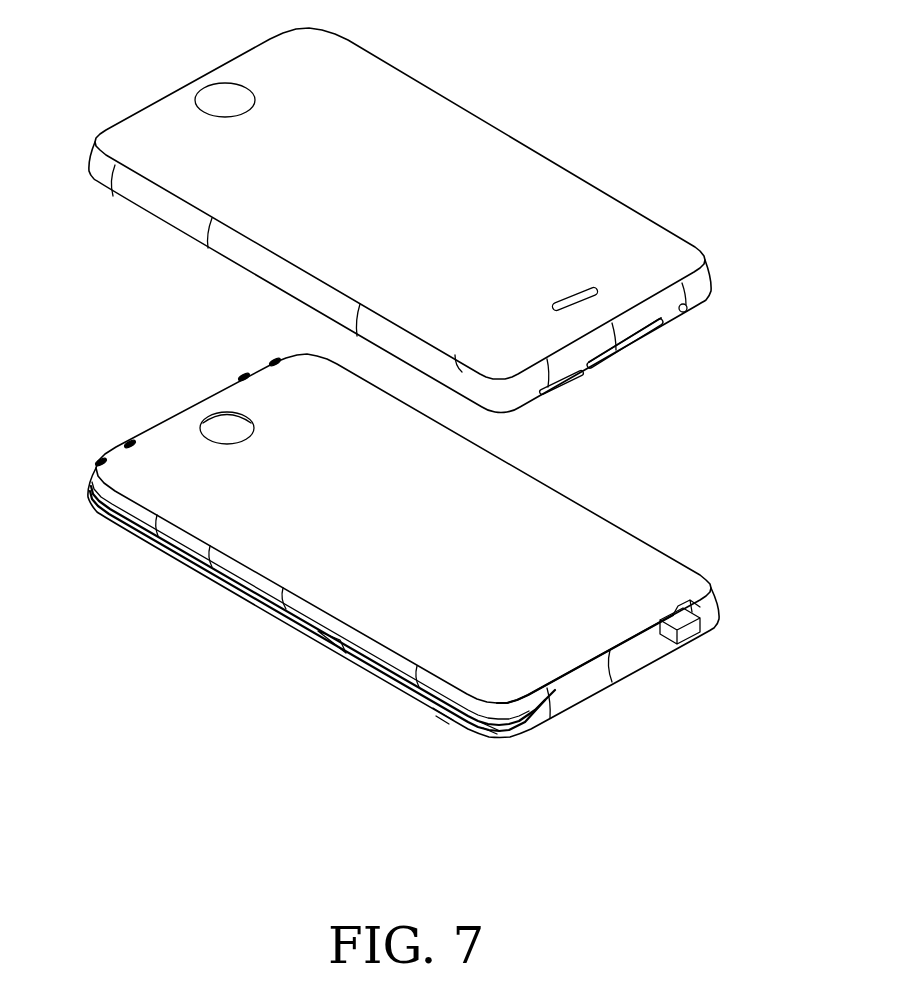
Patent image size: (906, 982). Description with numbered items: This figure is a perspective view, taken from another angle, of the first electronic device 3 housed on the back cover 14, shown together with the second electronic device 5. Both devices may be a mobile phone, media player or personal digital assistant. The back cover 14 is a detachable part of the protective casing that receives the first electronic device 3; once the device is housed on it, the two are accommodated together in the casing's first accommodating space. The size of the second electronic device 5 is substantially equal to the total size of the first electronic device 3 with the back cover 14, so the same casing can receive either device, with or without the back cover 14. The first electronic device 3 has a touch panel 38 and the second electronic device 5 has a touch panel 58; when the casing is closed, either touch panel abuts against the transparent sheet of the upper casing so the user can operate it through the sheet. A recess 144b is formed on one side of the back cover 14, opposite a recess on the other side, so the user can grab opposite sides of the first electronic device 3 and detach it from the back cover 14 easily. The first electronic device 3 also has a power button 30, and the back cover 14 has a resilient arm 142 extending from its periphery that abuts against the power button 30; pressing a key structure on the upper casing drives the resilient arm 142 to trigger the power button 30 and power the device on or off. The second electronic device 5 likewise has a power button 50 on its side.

The second electronic device 5 is at (502, 127).
The touch panel 58 is at (558, 177).
The power button 50 is at (570, 386).
The first electronic device 3 is at (657, 535).
The touch panel 38 is at (540, 497).
The back cover 14 is at (248, 623).
The recess 144b is at (377, 670).
The resilient arm 142 is at (693, 637).
The power button 30 is at (675, 608).